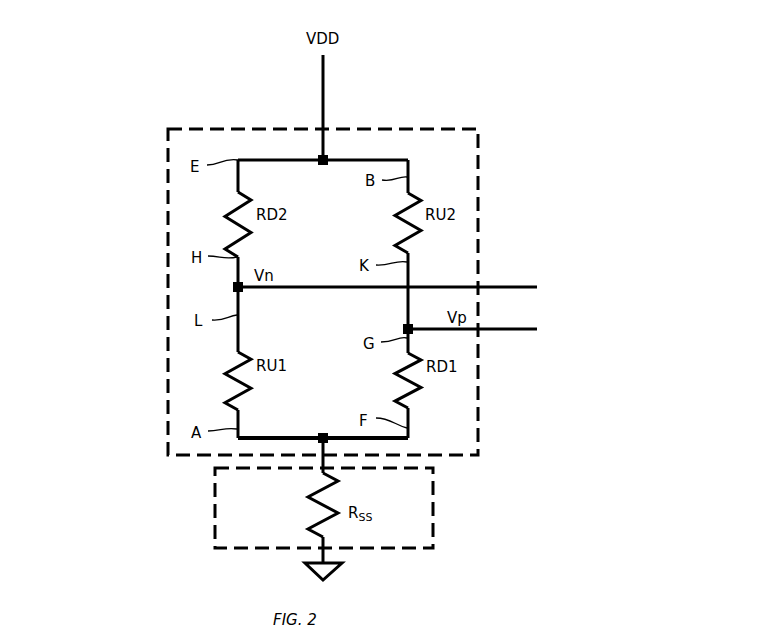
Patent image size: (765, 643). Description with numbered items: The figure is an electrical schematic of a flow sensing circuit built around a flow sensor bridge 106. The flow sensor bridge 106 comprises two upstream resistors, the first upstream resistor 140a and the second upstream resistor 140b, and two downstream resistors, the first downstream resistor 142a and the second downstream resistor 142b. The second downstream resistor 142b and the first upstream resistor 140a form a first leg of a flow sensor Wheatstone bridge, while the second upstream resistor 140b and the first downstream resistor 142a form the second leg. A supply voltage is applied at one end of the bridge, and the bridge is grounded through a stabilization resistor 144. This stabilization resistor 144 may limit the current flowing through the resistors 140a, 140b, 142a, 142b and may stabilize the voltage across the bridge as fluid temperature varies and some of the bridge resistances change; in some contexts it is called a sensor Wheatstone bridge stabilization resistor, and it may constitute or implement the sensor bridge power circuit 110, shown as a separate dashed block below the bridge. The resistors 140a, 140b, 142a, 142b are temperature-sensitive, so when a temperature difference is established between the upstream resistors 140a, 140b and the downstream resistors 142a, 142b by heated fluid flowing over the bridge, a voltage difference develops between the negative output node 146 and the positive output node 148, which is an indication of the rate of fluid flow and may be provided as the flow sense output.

The flow sensor bridge 106 is at (215, 128).
The second downstream resistor RD2 142b is at (228, 218).
The second upstream resistor RU2 140b is at (418, 233).
The Vn 146 is at (510, 289).
The Vp 148 is at (514, 331).
The first upstream resistor RU1 140a is at (227, 376).
The first downstream resistor RD1 142a is at (420, 388).
The resistor RSS 144 is at (315, 496).
The sensor bridge power circuit 110 is at (433, 503).